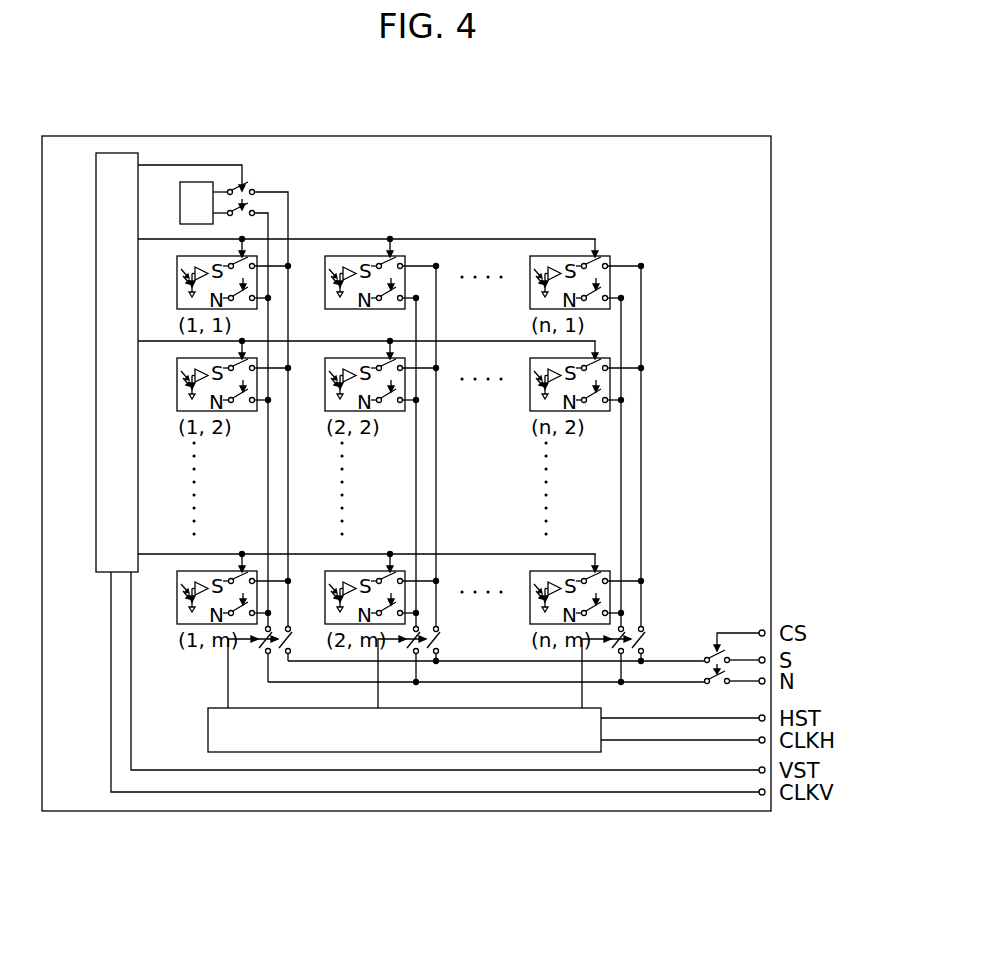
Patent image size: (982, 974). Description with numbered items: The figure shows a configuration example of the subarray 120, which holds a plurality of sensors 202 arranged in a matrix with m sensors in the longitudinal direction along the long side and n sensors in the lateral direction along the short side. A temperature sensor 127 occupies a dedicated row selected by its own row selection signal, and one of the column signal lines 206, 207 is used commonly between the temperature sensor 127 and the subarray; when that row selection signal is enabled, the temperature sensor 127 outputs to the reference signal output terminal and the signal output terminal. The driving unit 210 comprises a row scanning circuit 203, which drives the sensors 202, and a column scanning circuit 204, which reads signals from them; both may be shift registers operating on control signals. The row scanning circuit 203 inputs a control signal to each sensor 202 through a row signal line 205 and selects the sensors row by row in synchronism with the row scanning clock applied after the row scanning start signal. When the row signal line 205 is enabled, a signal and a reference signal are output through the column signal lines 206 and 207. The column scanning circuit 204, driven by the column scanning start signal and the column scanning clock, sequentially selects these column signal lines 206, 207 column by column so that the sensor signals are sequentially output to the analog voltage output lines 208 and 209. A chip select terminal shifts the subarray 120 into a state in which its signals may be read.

The subarray 120 is at (472, 152).
The temperature sensor 127 is at (197, 182).
The sensor 202 is at (347, 254).
The row scanning circuit 203 is at (115, 565).
The column scanning circuit 204 is at (223, 745).
The row signal line 205 is at (305, 239).
The column signal line 206 is at (621, 453).
The column signal line 207 is at (640, 496).
The analog voltage output line 208 is at (525, 660).
The analog voltage output line 209 is at (472, 682).
The driving unit 210 is at (348, 532).